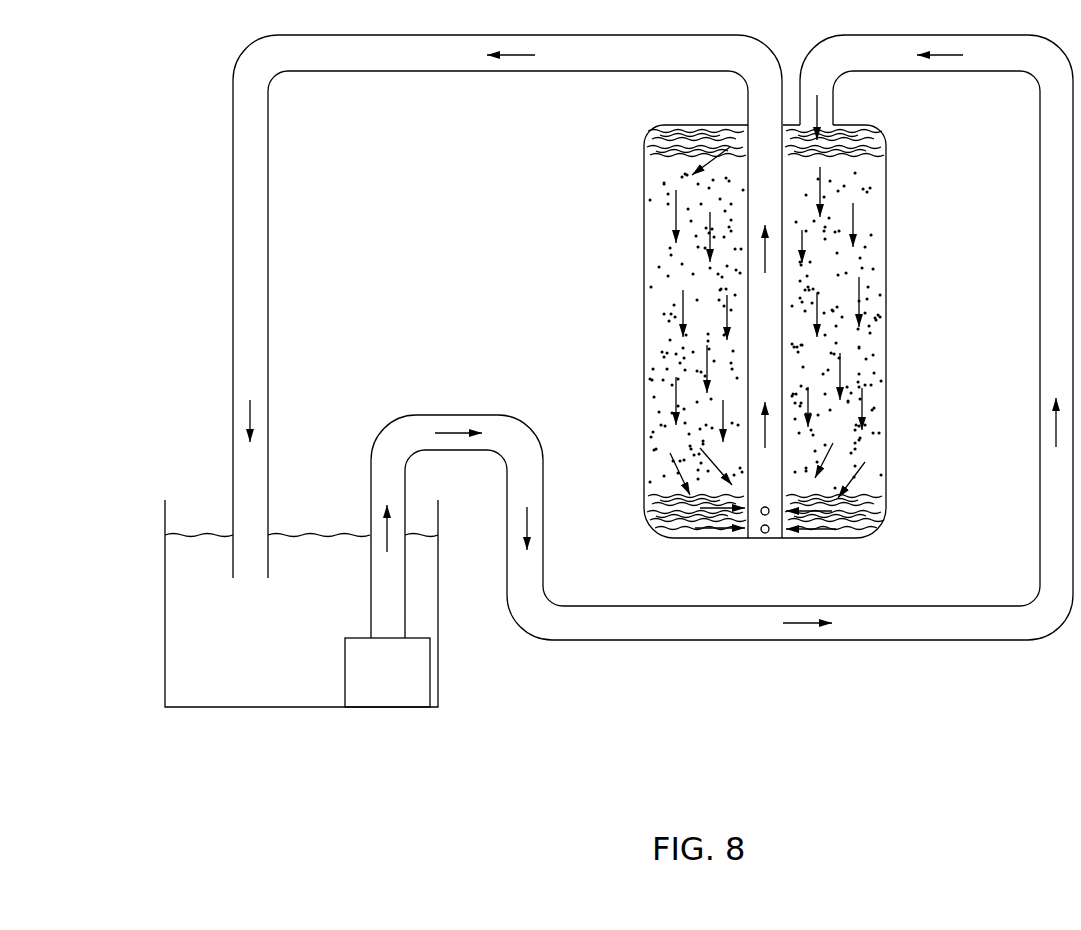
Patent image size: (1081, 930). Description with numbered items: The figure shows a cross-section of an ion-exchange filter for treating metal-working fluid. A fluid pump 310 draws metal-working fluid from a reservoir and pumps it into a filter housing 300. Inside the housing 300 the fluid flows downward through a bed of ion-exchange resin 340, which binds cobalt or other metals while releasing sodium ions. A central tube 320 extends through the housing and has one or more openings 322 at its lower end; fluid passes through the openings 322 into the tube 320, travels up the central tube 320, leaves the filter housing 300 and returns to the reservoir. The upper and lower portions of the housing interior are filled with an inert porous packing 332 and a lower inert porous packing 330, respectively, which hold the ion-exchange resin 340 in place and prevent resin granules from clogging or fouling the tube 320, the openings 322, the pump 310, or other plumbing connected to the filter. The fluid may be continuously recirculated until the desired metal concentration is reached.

The filter housing 300 is at (645, 422).
The fluid pump 310 is at (393, 668).
The central tube 320 is at (762, 380).
The openings 322 is at (765, 535).
The lower inert porous packing 330 is at (680, 520).
The upper inert porous packing 332 is at (650, 150).
The ion-exchange resin 340 is at (660, 298).